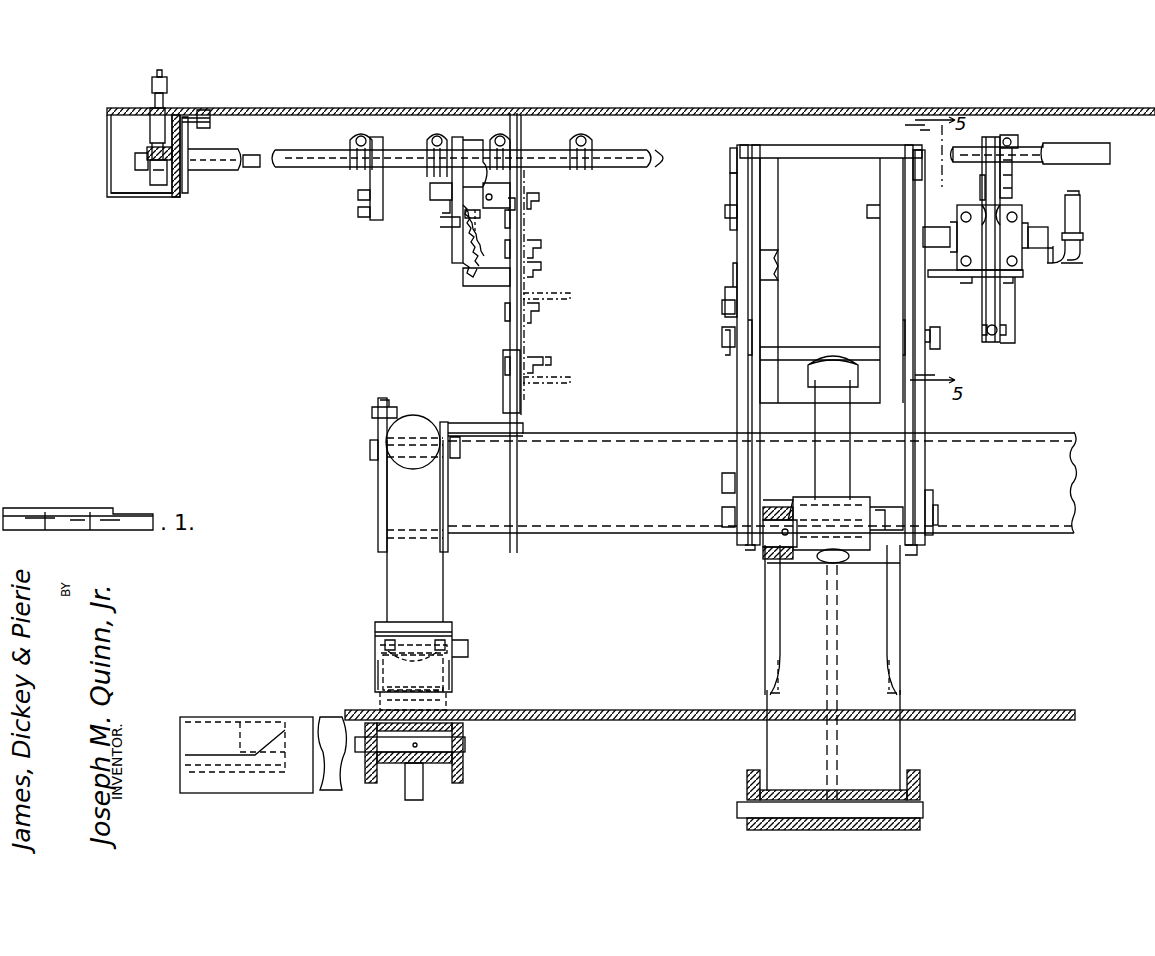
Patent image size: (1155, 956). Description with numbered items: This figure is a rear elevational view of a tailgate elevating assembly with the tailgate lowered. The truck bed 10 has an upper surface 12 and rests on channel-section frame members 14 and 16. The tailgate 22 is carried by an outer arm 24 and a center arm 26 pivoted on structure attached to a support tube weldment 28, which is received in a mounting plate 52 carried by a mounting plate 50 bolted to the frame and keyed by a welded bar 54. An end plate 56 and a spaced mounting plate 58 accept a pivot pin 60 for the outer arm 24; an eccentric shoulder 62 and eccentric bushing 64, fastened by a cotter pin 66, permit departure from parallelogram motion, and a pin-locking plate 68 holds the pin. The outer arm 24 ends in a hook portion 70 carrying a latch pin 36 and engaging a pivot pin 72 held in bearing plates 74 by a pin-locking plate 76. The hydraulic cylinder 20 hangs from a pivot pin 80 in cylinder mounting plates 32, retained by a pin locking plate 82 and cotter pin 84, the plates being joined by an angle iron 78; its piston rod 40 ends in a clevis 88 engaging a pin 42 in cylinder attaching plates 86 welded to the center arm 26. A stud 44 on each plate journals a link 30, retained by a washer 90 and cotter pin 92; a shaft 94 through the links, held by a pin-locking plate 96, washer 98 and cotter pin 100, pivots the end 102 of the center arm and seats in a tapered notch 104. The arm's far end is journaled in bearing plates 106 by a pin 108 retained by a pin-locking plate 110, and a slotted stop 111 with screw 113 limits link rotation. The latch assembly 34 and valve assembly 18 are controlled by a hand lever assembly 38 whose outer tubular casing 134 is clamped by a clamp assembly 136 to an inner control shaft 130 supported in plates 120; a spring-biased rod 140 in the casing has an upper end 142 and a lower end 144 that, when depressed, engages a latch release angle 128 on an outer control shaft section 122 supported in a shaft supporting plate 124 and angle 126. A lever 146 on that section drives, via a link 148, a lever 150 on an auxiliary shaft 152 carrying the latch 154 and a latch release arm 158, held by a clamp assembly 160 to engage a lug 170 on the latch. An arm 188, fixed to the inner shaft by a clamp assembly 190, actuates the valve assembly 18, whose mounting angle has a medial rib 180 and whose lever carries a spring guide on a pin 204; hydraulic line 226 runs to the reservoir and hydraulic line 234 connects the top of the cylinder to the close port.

The bed 10 is at (110, 177).
The upper surface 12 is at (760, 110).
The channel section 14 is at (560, 297).
The channel section 16 is at (555, 305).
The valve assembly 18 is at (1027, 231).
The hydraulic cylinder 20 is at (835, 192).
The tailgate 22 is at (208, 722).
The outer arm 24 is at (420, 585).
The center arm 26 is at (875, 632).
The support tube weldment 28 is at (610, 488).
The link 30 is at (737, 408).
The cylinder mounting plate 32 is at (752, 377).
The latch assembly 34 is at (434, 271).
The latch pin 36 is at (462, 648).
The hand lever assembly 38 is at (130, 105).
The piston rod 40 is at (830, 412).
The pin 42 is at (755, 552).
The stud 44 is at (718, 330).
The mounting plate 50 is at (507, 333).
The mounting plate 52 is at (502, 387).
The bar 54 is at (480, 408).
The end plate 56 is at (377, 513).
The mounting plate 58 is at (448, 510).
The pivot pin 60 is at (370, 447).
The eccentric shoulder 62 is at (372, 468).
The eccentric bushing 64 is at (460, 450).
The cotter pin 66 is at (458, 468).
The pin-locking plate 68 is at (370, 422).
The hook portion 70 is at (445, 712).
The pivot pin 72 is at (445, 748).
The bearing plate 74 is at (365, 770).
The pin-locking plate 76 is at (355, 712).
The angle iron 78 is at (775, 266).
The pivot pin 80 is at (730, 160).
The pin locking plate 82 is at (730, 183).
The cotter pin 84 is at (918, 145).
The cylinder attaching plate 86 is at (760, 618).
The clevis 88 is at (865, 497).
The washer 90 is at (728, 360).
The cotter pin 92 is at (723, 345).
The shaft 94 is at (723, 515).
The pin-locking plate 96 is at (723, 492).
The washer 98 is at (935, 490).
The cotter pin 100 is at (940, 510).
The end 102 is at (790, 500).
The tapered notch 104 is at (735, 546).
The bearing plate 106 is at (770, 790).
The pin 108 is at (740, 810).
The pin-locking plate 110 is at (745, 795).
The stop 111 is at (725, 278).
The screw 113 is at (722, 298).
The plate 120 is at (463, 237).
The outer control shaft section 122 is at (300, 173).
The shaft supporting plate 124 is at (182, 170).
The angle 126 is at (195, 150).
The latch release angle 128 is at (140, 195).
The inner control shaft 130 is at (255, 150).
The outer tubular casing 134 is at (148, 123).
The clamp assembly 136 is at (143, 142).
The rod 140 is at (167, 107).
The upper end 142 is at (152, 78).
The lower end 144 is at (145, 185).
The lever 146 is at (368, 222).
The link 148 is at (410, 160).
The lever 150 is at (355, 194).
The auxiliary shaft 152 is at (410, 148).
The latch 154 is at (450, 235).
The latch release arm 158 is at (440, 214).
The clamp assembly 160 is at (460, 143).
The lug 170 is at (445, 205).
The medial rib 180 is at (977, 314).
The arm 188 is at (1013, 183).
The clamp assembly 190 is at (1020, 138).
The pin 204 is at (1005, 332).
The hydraulic line 226 is at (1046, 220).
The hydraulic line 234 is at (1081, 213).